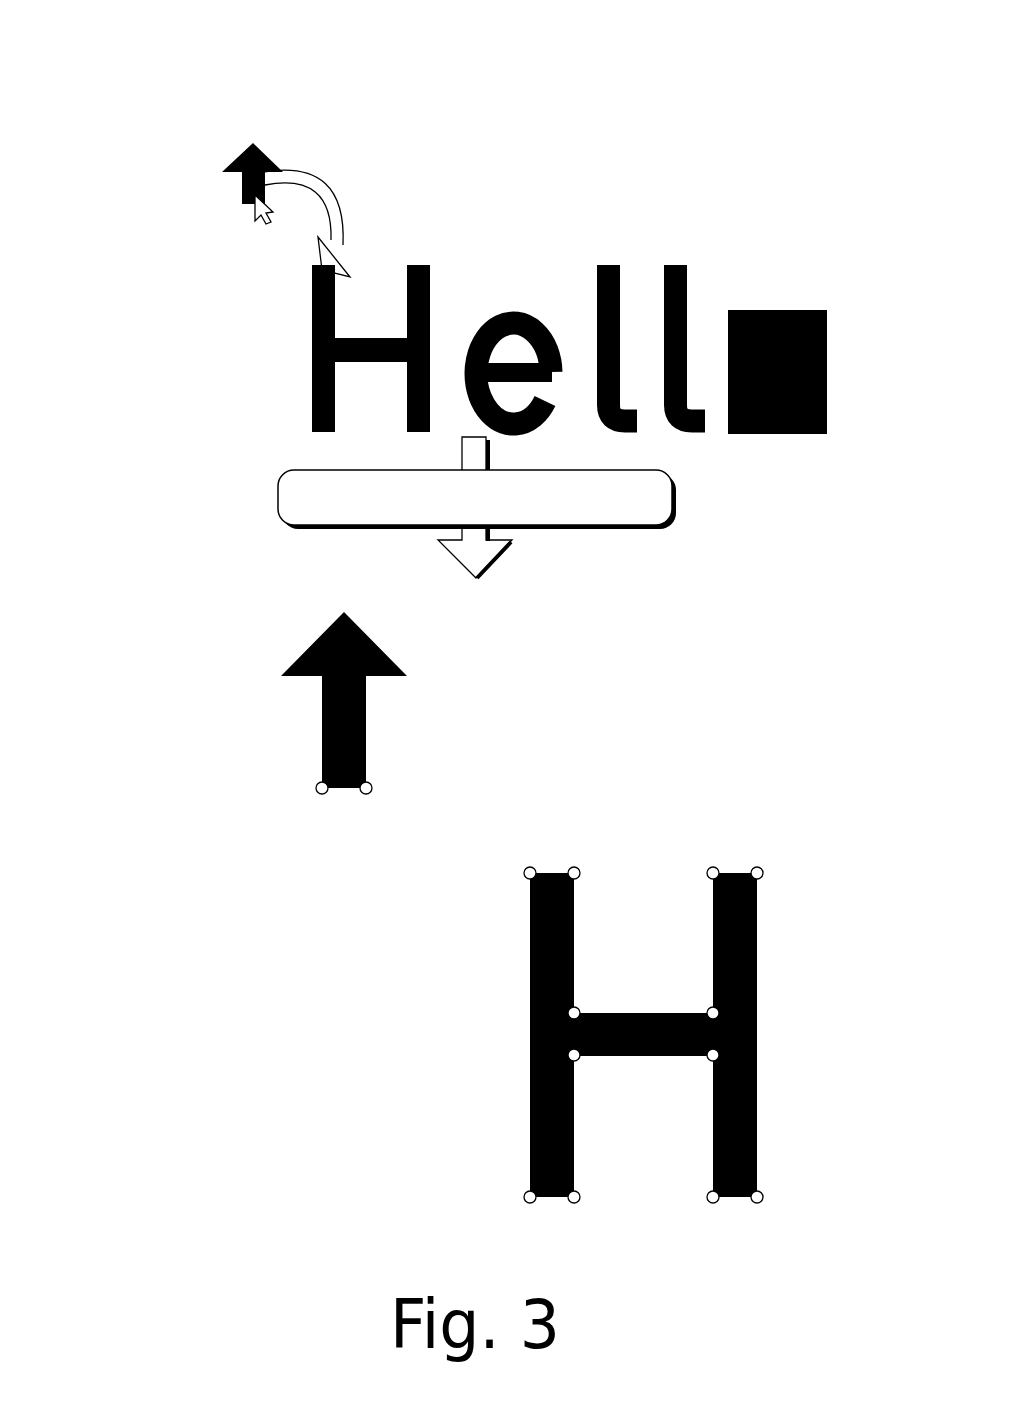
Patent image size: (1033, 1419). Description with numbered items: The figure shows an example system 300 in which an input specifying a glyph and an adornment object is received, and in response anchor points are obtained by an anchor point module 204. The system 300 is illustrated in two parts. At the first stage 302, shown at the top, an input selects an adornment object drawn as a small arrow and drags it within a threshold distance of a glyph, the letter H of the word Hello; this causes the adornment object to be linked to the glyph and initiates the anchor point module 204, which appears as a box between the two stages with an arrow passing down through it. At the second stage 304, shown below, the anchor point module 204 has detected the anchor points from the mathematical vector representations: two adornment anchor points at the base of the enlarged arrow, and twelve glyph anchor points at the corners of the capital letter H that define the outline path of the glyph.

The system 300 is at (149, 62).
The first stage 302 is at (124, 178).
The second stage 304 is at (117, 619).
The anchor point module 204 is at (477, 507).